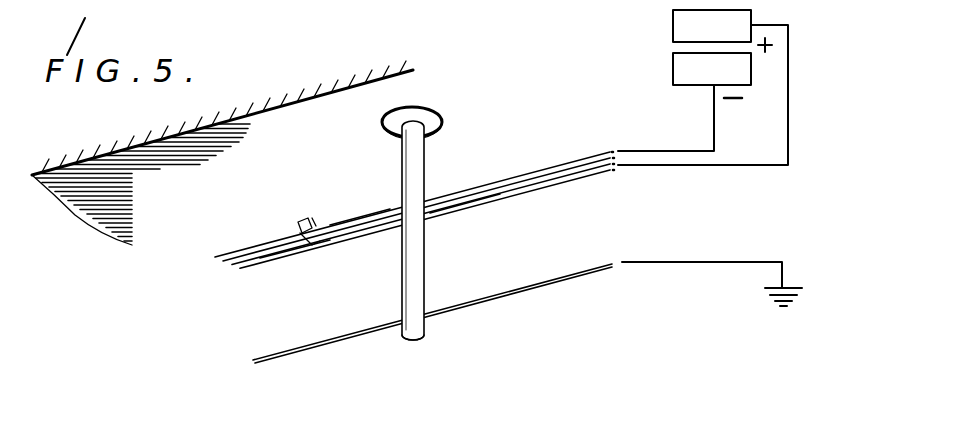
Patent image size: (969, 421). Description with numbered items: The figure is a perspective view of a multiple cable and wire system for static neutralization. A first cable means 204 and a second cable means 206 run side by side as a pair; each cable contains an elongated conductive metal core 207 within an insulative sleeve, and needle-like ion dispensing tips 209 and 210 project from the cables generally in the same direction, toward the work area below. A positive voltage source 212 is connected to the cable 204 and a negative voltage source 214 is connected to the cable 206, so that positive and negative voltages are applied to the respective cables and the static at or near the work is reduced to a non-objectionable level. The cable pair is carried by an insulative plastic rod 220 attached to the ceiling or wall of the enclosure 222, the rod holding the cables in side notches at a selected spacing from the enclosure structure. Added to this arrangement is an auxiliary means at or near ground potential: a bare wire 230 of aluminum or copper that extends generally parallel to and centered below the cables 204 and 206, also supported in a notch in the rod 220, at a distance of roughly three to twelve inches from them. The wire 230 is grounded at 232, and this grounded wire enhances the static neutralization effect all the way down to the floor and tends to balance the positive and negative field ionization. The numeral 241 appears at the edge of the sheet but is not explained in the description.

The first cable means 204 is at (452, 208).
The second cable means 206 is at (340, 222).
The elongated conductive metal core 207 is at (310, 222).
The ion dispensing tip 209 is at (283, 243).
The ion dispensing tip 210 is at (570, 189).
The positive voltage source 212 is at (673, 30).
The negative voltage source 214 is at (683, 70).
The insulative plastic rod 220 is at (424, 274).
The enclosure 222 is at (83, 183).
The bare wire 230 is at (328, 343).
The ground 232 is at (763, 261).
The reference (partial) 241 is at (41, 415).